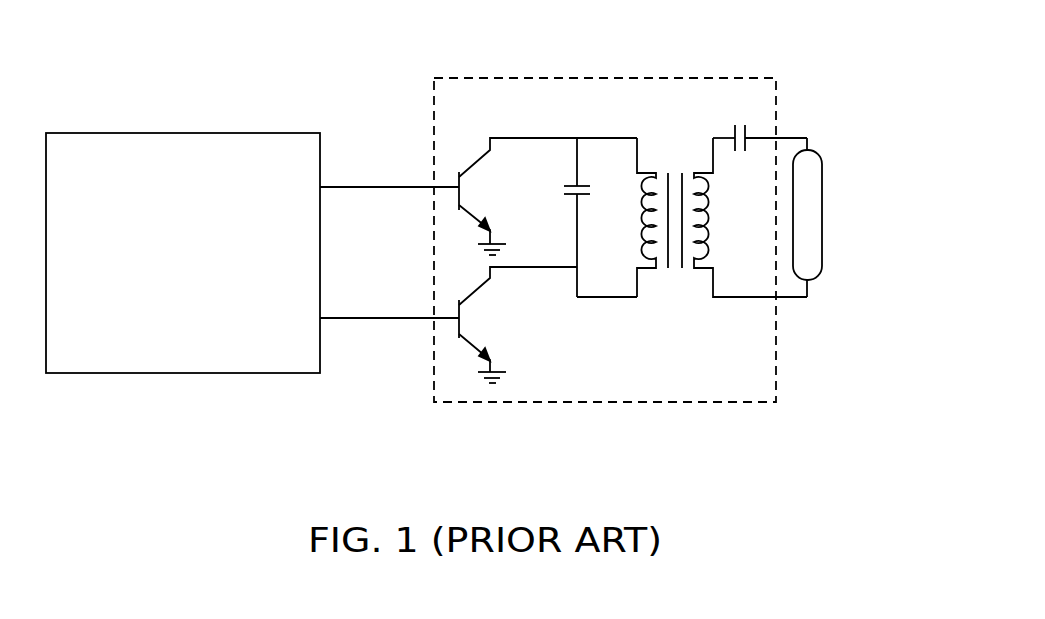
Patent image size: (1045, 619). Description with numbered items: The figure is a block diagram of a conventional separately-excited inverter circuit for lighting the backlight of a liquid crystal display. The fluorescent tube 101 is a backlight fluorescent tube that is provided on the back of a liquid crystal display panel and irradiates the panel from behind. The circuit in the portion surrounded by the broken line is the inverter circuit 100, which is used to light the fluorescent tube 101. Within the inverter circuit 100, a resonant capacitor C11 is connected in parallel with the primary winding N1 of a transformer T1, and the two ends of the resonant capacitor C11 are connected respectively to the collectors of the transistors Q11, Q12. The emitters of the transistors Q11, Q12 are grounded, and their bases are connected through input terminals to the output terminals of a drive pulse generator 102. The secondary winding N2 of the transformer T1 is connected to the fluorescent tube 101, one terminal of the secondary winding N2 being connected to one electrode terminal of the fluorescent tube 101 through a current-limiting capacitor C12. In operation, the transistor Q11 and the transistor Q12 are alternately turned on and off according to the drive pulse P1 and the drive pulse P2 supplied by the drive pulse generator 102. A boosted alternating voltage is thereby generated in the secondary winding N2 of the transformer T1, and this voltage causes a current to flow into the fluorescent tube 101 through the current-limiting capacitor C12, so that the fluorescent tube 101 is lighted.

The separately-excited inverter circuit 100 is at (607, 78).
The fluorescent tube 101 is at (822, 187).
The drive pulse generator 102 is at (150, 133).
The drive pulse P1 is at (389, 164).
The drive pulse P2 is at (389, 296).
The transistor Q11 is at (548, 196).
The transistor Q12 is at (518, 325).
The resonant capacitor C11 is at (578, 217).
The current-limiting capacitor C12 is at (760, 120).
The transformer T1 is at (702, 212).
The primary winding N1 is at (627, 217).
The secondary winding N2 is at (750, 217).